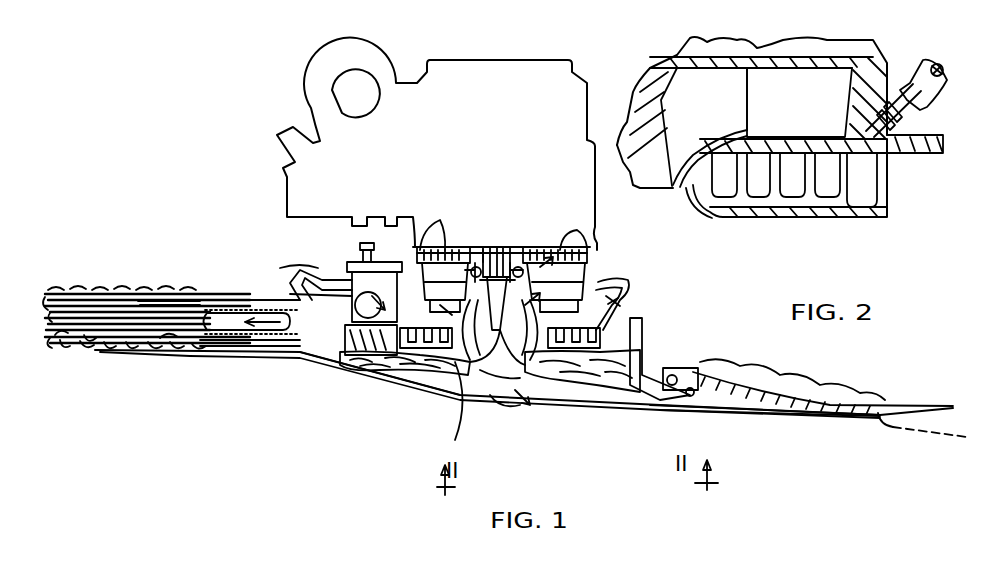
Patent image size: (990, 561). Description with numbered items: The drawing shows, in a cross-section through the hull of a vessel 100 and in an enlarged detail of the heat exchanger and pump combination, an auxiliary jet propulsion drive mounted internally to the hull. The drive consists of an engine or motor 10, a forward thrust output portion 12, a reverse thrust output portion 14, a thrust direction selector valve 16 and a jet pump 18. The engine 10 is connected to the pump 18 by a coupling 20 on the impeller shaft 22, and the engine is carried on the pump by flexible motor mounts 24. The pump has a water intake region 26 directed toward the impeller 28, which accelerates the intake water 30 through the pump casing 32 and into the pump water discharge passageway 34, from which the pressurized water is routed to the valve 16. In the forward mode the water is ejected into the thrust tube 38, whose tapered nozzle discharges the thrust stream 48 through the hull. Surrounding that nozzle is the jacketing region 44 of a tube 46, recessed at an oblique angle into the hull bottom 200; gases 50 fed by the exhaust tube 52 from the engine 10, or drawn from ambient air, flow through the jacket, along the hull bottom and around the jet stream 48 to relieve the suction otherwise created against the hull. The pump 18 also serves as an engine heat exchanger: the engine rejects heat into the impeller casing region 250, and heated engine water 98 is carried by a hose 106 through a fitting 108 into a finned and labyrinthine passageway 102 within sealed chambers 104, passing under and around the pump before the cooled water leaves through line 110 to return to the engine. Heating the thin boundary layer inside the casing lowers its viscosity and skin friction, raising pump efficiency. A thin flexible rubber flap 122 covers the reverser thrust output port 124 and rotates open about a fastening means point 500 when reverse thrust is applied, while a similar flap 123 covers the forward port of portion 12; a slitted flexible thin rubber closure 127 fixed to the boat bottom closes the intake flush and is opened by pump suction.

In FIG. 1, the engine or motor 10 is at (488, 184).
In FIG. 1, the forward thrust output portion 12 is at (170, 290).
In FIG. 1, the reverse thrust output portion 14 is at (717, 383).
In FIG. 1, the thrust direction selector valve 16 is at (283, 277).
In FIG. 1, the jet pump 18 is at (590, 280).
In FIG. 1, the coupling 20 is at (483, 250).
In FIG. 1, the impeller shaft 22 is at (503, 393).
In FIG. 1, the flexible motor mounts 24 is at (640, 277).
In FIG. 1, the water intake region 26 is at (553, 380).
In FIG. 1, the impeller 28 is at (438, 306).
In FIG. 2, the impeller 28 is at (752, 112).
In FIG. 1, the intake water 30 is at (648, 425).
In FIG. 1, the pump casing 32 is at (347, 293).
In FIG. 1, the pump water discharge passageway 34 is at (500, 318).
In FIG. 2, the pump water discharge passageway 34 is at (817, 98).
In FIG. 1, the thrust tube 38 is at (293, 287).
In FIG. 1, the jacketing region 44 is at (140, 300).
In FIG. 1, the tube 46 is at (143, 307).
In FIG. 1, the thrust stream 48 is at (57, 337).
In FIG. 1, the gases 50 is at (127, 307).
In FIG. 1, the exhaust tube 52 is at (290, 287).
In FIG. 2, the heated engine water 98 is at (941, 57).
In FIG. 1, the vessel 100 is at (286, 431).
In FIG. 2, the finned and labyrinthine passageway 102 is at (863, 192).
In FIG. 1, the sealed chambers 104 is at (433, 373).
In FIG. 2, the sealed chambers 104 is at (887, 173).
In FIG. 2, the hose 106 is at (930, 105).
In FIG. 2, the fitting 108 is at (907, 122).
In FIG. 1, the line 110 is at (340, 275).
In FIG. 1, the flap 122 is at (813, 412).
In FIG. 1, the flap 123 is at (170, 337).
In FIG. 1, the reverser thrust output port 124 is at (780, 417).
In FIG. 1, the flexible thin rubber closure 127 is at (513, 380).
In FIG. 1, the hull bottom 200 is at (407, 373).
In FIG. 2, the impeller casing region 250 is at (778, 127).
In FIG. 1, the fastening means point 500 is at (230, 350).